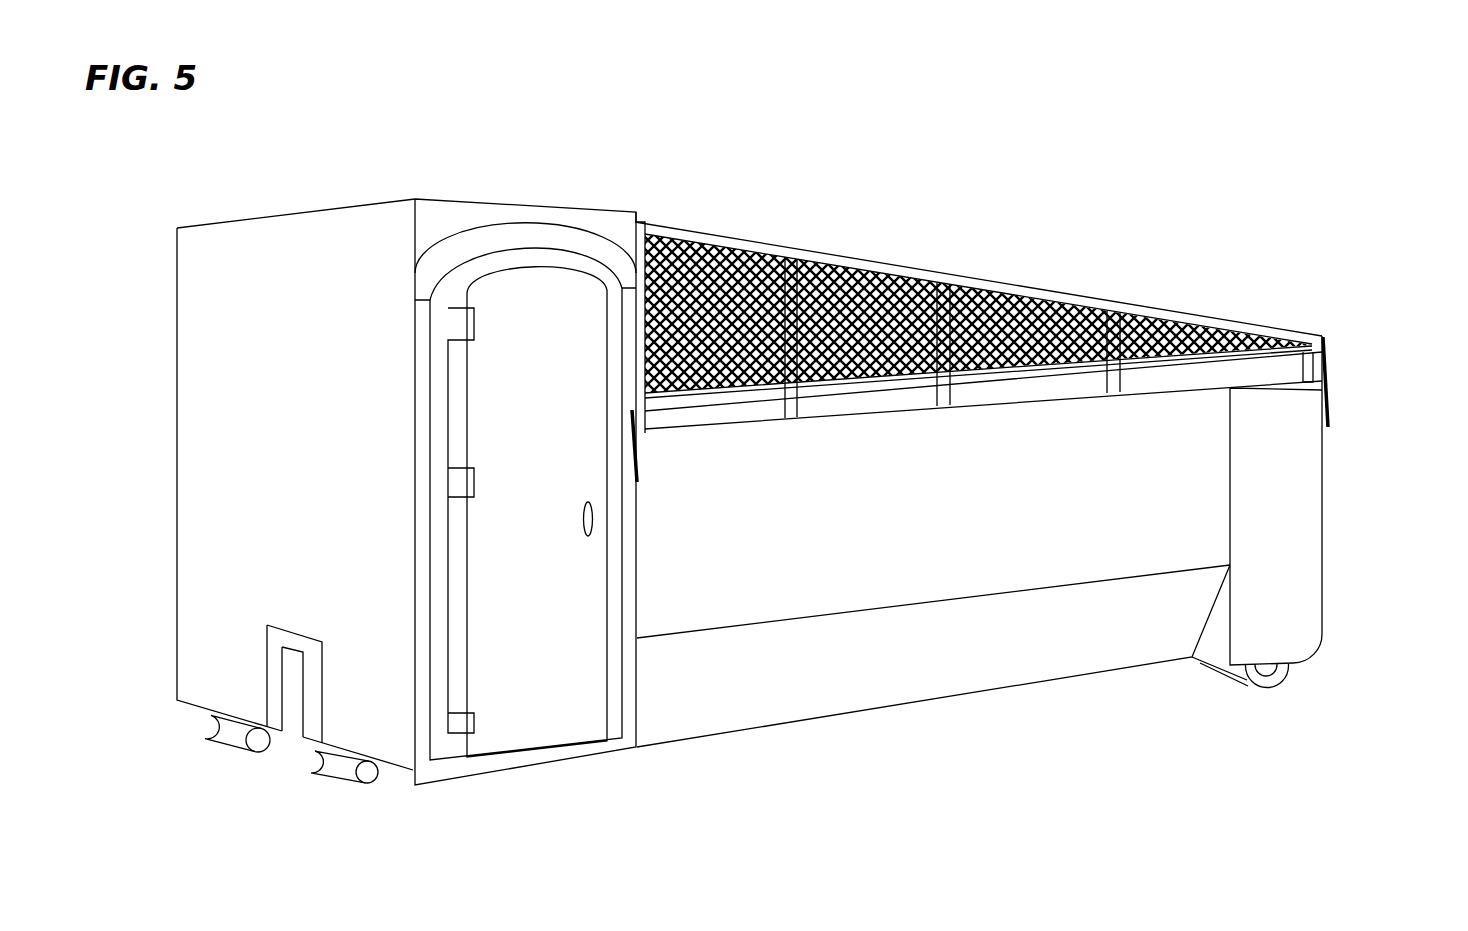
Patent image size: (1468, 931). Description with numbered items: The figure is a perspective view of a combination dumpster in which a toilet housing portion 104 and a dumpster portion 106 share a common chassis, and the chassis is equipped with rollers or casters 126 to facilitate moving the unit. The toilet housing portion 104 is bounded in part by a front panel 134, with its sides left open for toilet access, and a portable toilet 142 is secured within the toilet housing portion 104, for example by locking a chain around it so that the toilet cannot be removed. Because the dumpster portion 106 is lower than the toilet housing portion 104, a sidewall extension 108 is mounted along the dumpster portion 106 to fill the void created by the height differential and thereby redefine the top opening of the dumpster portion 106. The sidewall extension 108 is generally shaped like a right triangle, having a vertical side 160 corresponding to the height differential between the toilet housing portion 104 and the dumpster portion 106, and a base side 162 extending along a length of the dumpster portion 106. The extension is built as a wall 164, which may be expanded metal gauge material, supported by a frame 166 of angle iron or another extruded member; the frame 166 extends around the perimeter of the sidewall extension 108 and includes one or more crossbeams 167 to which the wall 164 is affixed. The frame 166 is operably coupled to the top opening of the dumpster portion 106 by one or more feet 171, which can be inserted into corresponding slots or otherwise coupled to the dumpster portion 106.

The toilet housing portion 104 is at (474, 218).
The dumpster portion 106 is at (1305, 463).
The sidewall extension 108 is at (800, 250).
The rollers or casters 126 is at (1267, 682).
The front panel 134 is at (227, 507).
The portable toilet 142 is at (533, 713).
The vertical side 160 is at (650, 430).
The base side 162 is at (1322, 397).
The wall 164 is at (902, 305).
The frame 166 is at (718, 243).
The crossbeam 167 is at (1125, 317).
The foot 171 is at (1322, 363).